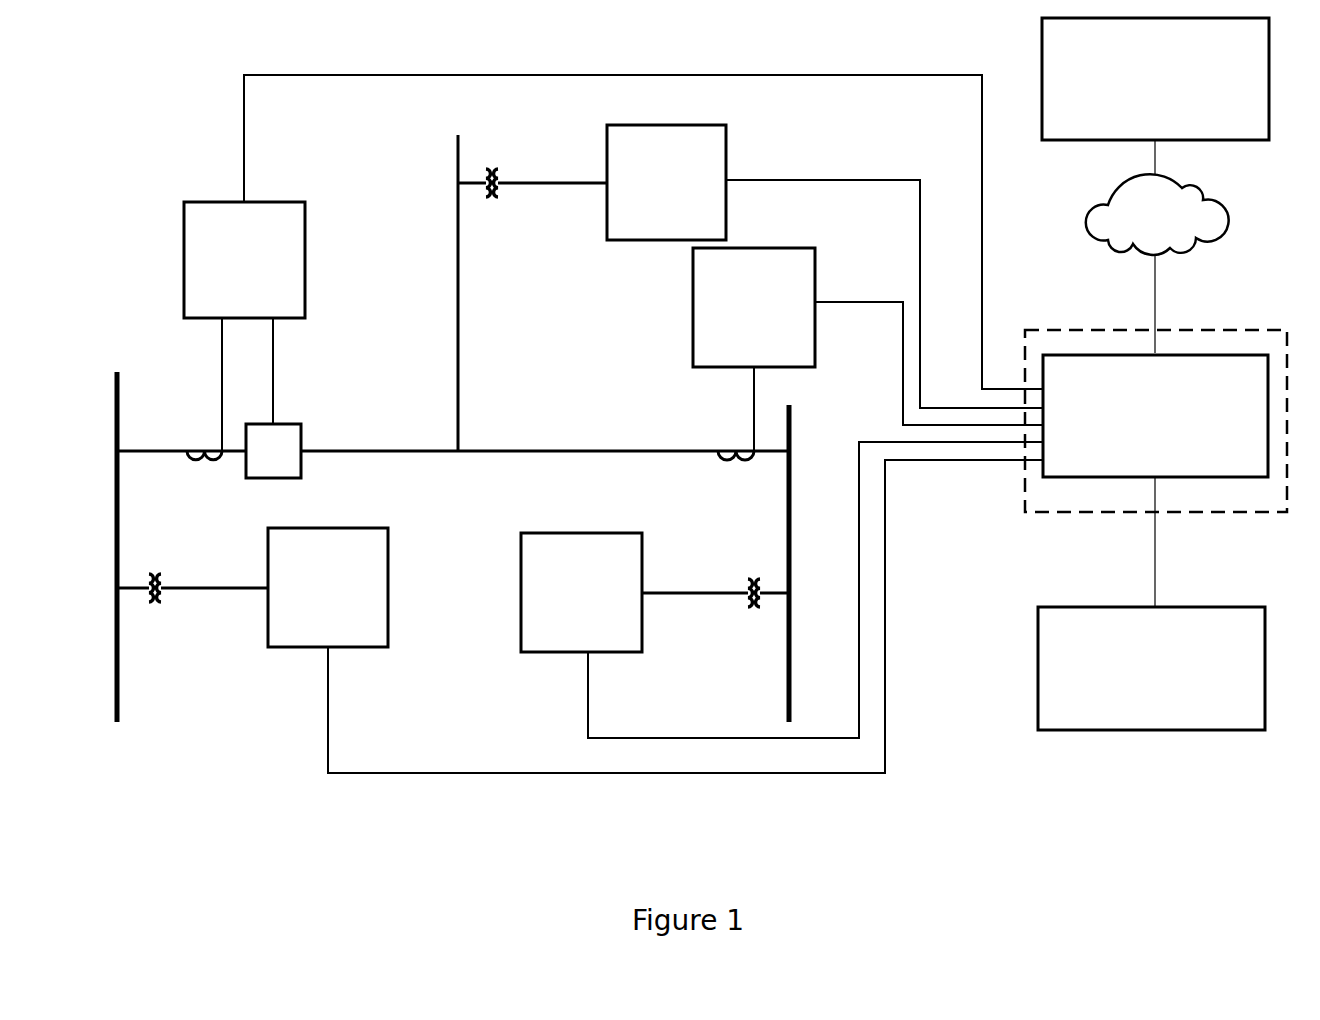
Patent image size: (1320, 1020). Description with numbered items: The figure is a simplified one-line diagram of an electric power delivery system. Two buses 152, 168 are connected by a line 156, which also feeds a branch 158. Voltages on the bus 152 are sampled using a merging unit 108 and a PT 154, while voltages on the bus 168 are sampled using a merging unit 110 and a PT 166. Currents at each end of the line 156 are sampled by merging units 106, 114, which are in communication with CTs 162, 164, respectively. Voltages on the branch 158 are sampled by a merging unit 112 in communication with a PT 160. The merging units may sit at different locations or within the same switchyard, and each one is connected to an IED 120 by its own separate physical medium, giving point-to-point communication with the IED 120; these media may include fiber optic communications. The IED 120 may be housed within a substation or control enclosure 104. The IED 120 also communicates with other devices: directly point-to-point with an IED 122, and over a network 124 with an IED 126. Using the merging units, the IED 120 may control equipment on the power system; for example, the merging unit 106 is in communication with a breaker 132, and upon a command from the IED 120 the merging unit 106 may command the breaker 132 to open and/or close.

The substation or control enclosure 104 is at (1024, 501).
The merging unit 106 is at (225, 272).
The merging unit 108 is at (309, 600).
The merging unit 110 is at (562, 604).
The merging unit 112 is at (647, 194).
The merging unit 114 is at (735, 318).
The IED 120 is at (1136, 428).
The IED 122 is at (1133, 680).
The network 124 is at (1138, 227).
The IED 126 is at (1136, 91).
The breaker 132 is at (256, 462).
The bus 152 is at (122, 688).
The PT 154 is at (163, 573).
The line 156 is at (134, 448).
The branch 158 is at (457, 378).
The PT 160 is at (485, 165).
The CT 162 is at (200, 461).
The CT 164 is at (735, 463).
The PT 166 is at (748, 610).
The bus 168 is at (793, 528).